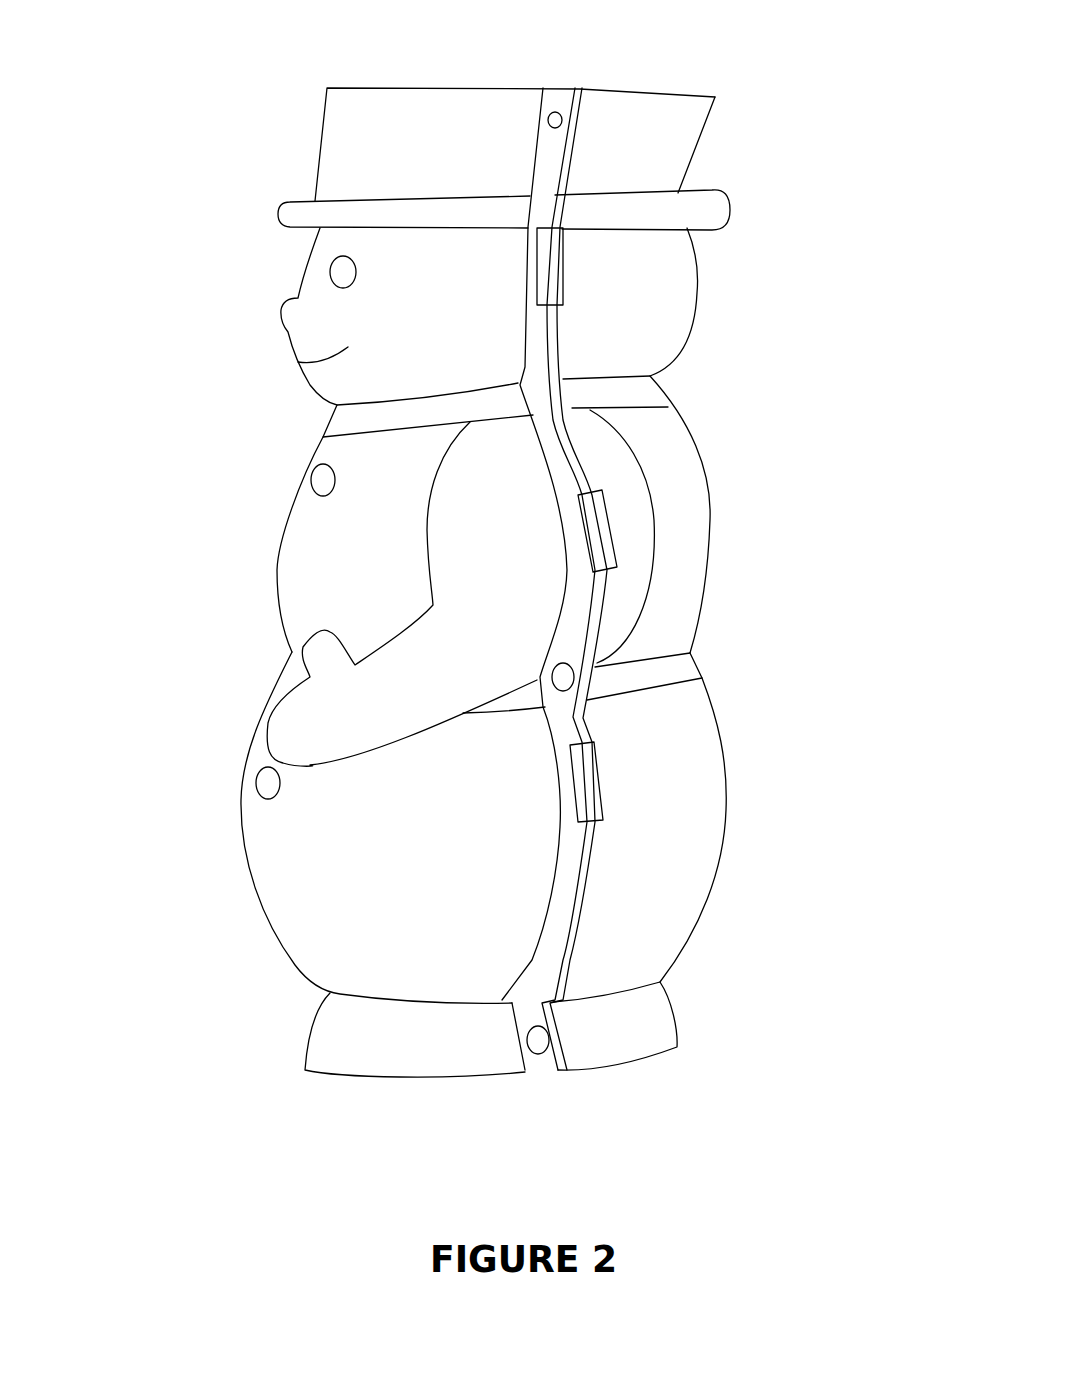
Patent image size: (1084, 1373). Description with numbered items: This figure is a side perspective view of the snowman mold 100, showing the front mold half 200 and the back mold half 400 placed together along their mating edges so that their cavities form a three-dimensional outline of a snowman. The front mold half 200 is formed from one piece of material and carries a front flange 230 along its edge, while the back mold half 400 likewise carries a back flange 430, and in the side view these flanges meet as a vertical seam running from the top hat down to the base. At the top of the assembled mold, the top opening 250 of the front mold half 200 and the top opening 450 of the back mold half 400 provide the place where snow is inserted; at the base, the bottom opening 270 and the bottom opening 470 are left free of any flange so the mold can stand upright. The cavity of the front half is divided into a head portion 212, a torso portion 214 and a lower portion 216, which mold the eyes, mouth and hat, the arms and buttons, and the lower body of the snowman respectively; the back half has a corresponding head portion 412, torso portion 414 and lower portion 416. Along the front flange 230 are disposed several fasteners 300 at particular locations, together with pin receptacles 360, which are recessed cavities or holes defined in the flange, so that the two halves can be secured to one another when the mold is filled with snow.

The snowman mold 100 is at (888, 1270).
The front mold half 200 is at (327, 1105).
The back mold half 400 is at (707, 1068).
The top opening 250 is at (375, 88).
The top opening 450 is at (710, 92).
The head portion 212 is at (297, 283).
The head portion 412 is at (698, 287).
The torso portion 214 is at (282, 508).
The torso portion 414 is at (712, 497).
The lower portion 216 is at (238, 830).
The lower portion 416 is at (727, 817).
The bottom opening 270 is at (450, 1077).
The bottom opening 470 is at (617, 1067).
The front flange 230 is at (537, 932).
The back flange 430 is at (585, 933).
The fastener 300 is at (600, 752).
The pin receptacle 360 is at (551, 678).